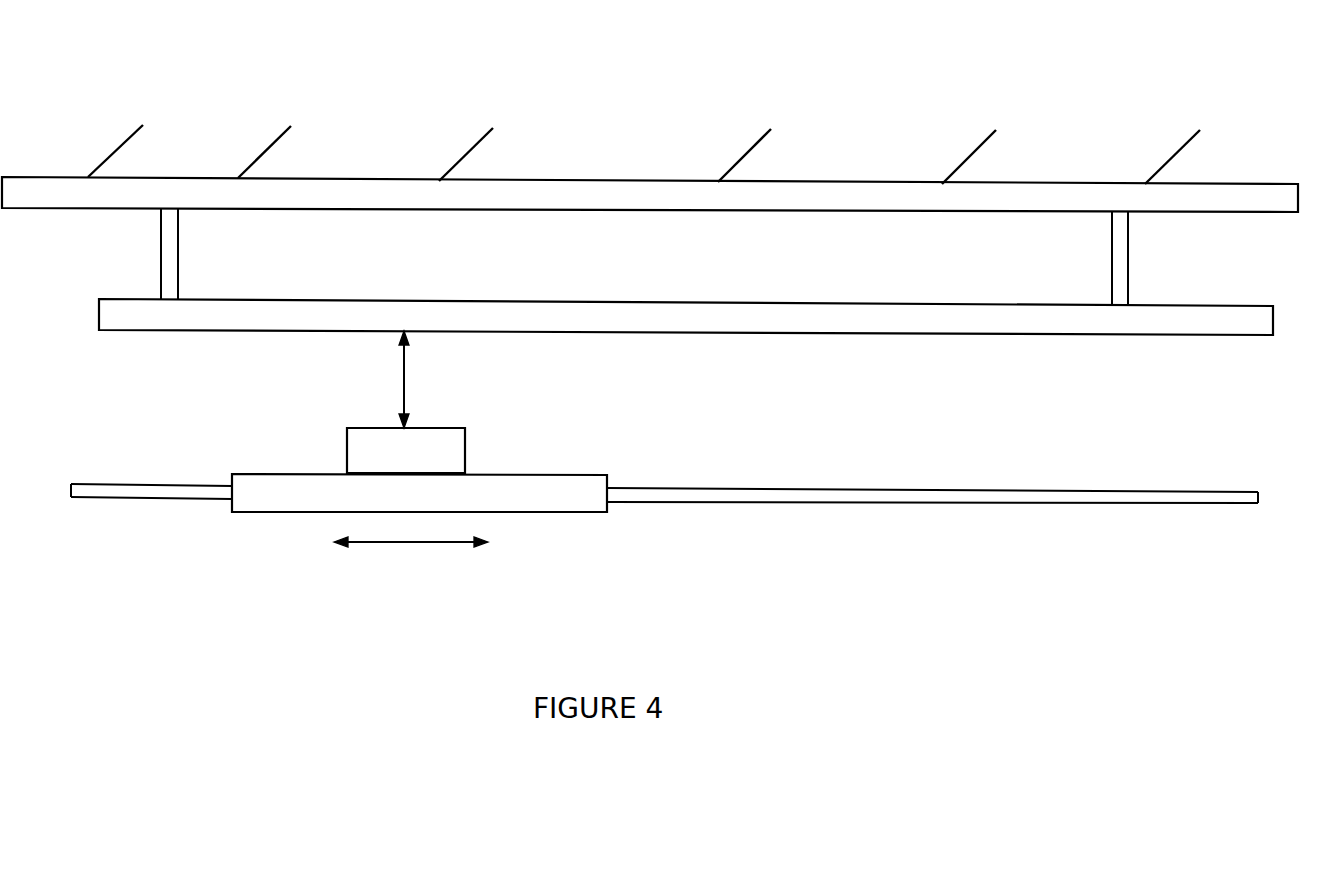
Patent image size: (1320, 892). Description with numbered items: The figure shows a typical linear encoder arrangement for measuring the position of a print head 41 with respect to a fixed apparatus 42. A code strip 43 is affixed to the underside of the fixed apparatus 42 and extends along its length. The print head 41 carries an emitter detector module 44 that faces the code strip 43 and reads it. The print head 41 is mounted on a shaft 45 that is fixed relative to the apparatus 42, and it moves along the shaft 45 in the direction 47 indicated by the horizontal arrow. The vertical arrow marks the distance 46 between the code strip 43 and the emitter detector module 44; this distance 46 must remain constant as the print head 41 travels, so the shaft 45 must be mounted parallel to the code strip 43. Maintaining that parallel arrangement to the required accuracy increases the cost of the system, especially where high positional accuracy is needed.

The print head 41 is at (580, 500).
The fixed apparatus 42 is at (1297, 183).
The code strip 43 is at (1250, 337).
The emitter detector module 44 is at (365, 442).
The shaft 45 is at (1130, 497).
The distance 46 is at (405, 377).
The direction 47 is at (400, 544).